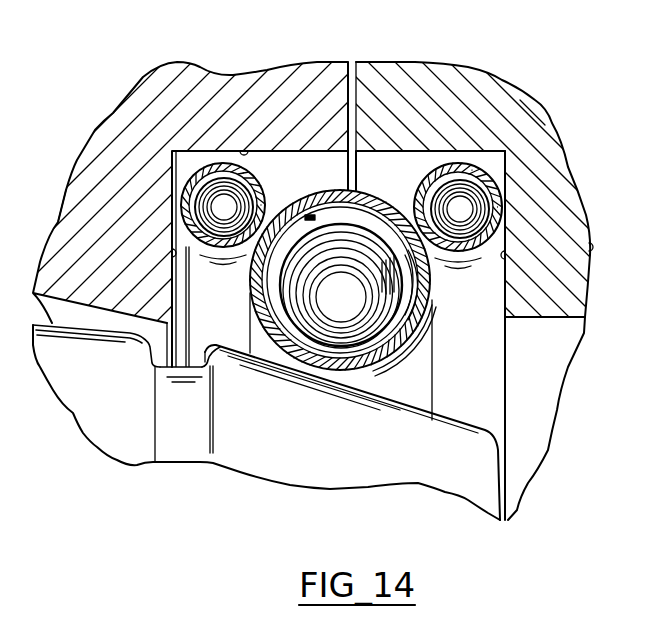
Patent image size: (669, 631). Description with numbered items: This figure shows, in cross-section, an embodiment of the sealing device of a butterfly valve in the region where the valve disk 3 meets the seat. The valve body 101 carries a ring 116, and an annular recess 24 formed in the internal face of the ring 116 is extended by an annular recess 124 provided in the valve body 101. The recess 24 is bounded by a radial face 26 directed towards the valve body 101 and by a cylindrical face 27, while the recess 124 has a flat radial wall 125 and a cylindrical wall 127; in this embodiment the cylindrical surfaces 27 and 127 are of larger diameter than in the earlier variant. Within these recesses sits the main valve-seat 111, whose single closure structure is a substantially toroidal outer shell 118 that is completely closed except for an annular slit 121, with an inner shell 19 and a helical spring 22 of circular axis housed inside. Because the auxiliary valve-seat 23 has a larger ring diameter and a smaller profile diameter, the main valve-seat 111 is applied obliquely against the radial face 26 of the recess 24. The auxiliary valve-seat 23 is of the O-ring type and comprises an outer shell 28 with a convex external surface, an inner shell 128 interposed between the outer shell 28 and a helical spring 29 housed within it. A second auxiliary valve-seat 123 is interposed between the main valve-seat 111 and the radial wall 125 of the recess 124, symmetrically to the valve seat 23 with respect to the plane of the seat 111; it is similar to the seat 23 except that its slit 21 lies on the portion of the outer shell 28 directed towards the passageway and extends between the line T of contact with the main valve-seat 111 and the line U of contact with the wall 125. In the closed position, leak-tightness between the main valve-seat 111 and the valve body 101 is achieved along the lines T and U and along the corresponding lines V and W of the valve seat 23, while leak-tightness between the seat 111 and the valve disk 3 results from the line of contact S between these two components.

The butterfly valve disk 3 is at (470, 475).
The inner shell 19 is at (367, 372).
The annular slit 21 is at (187, 285).
The helical spring 22 is at (347, 347).
The auxiliary valve-seat 23 is at (515, 140).
The annular recess 24 is at (474, 282).
The radial face 26 is at (589, 247).
The cylindrical face 27 is at (386, 198).
The outer shell 28 is at (178, 192).
The helical spring 29 is at (185, 185).
The valve body 101 is at (253, 253).
The main valve-seat 111 is at (366, 177).
The ring 116 is at (541, 150).
The outer shell 118 is at (331, 373).
The annular slit 121 is at (485, 165).
The second auxiliary valve-seat 123 is at (259, 165).
The annular recess 124 is at (313, 157).
The flat radial wall 125 is at (103, 210).
The cylindrical wall 127 is at (213, 158).
The inner shell 128 is at (178, 80).
The line of contact S is at (306, 372).
The line of contact T is at (278, 170).
The line of contact U is at (178, 196).
The line of contact V is at (432, 243).
The line of contact W is at (500, 205).